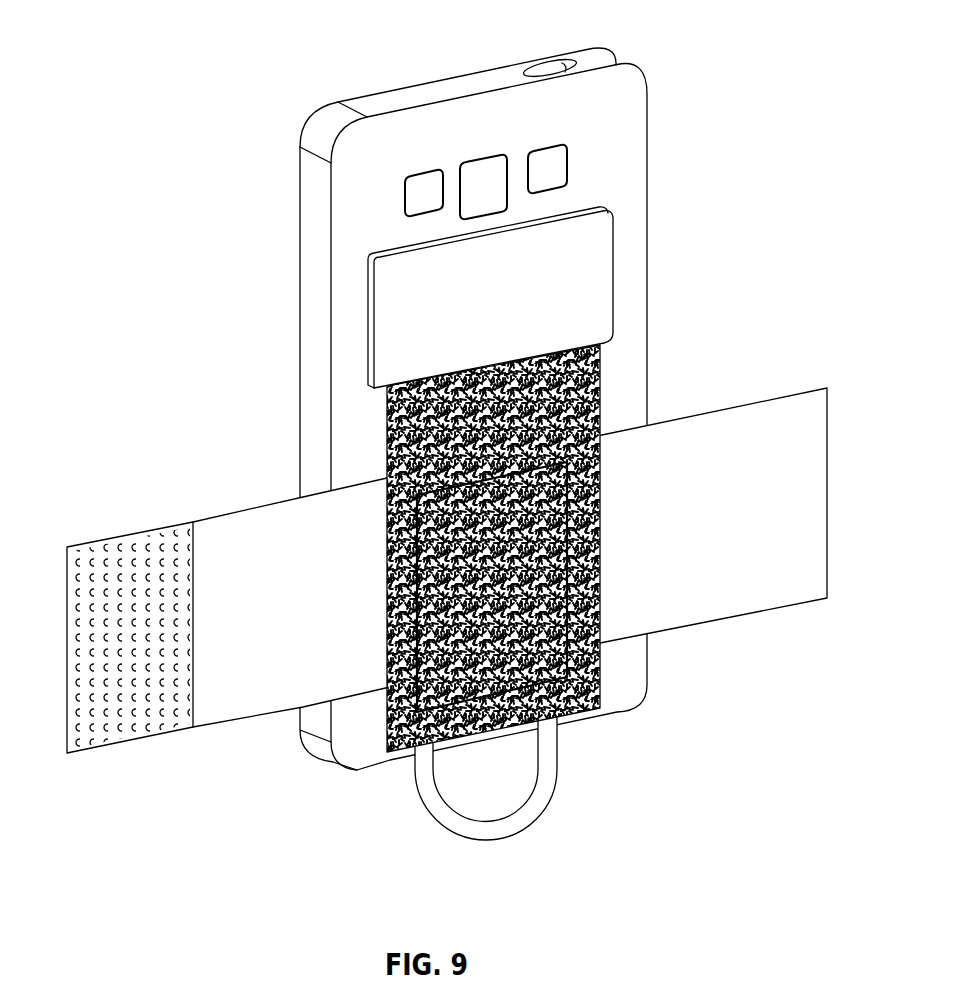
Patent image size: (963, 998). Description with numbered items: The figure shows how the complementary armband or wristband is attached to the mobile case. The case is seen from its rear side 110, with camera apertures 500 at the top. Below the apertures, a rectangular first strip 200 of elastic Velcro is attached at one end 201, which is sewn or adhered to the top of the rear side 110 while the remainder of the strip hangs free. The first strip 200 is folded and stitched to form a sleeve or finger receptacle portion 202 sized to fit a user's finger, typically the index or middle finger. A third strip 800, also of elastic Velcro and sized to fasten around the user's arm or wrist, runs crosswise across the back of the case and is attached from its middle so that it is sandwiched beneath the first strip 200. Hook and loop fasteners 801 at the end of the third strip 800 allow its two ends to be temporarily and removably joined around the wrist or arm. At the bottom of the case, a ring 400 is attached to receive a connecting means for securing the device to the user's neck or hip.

The rear side 110 is at (597, 158).
The camera apertures 500 is at (477, 182).
The end of first strip 201 is at (597, 268).
The first strip 200 is at (597, 390).
The sleeve or finger receptacle portion 202 is at (563, 730).
The ring 400 is at (507, 823).
The third strip 800 is at (255, 688).
The hook and loop fasteners 801 is at (133, 570).